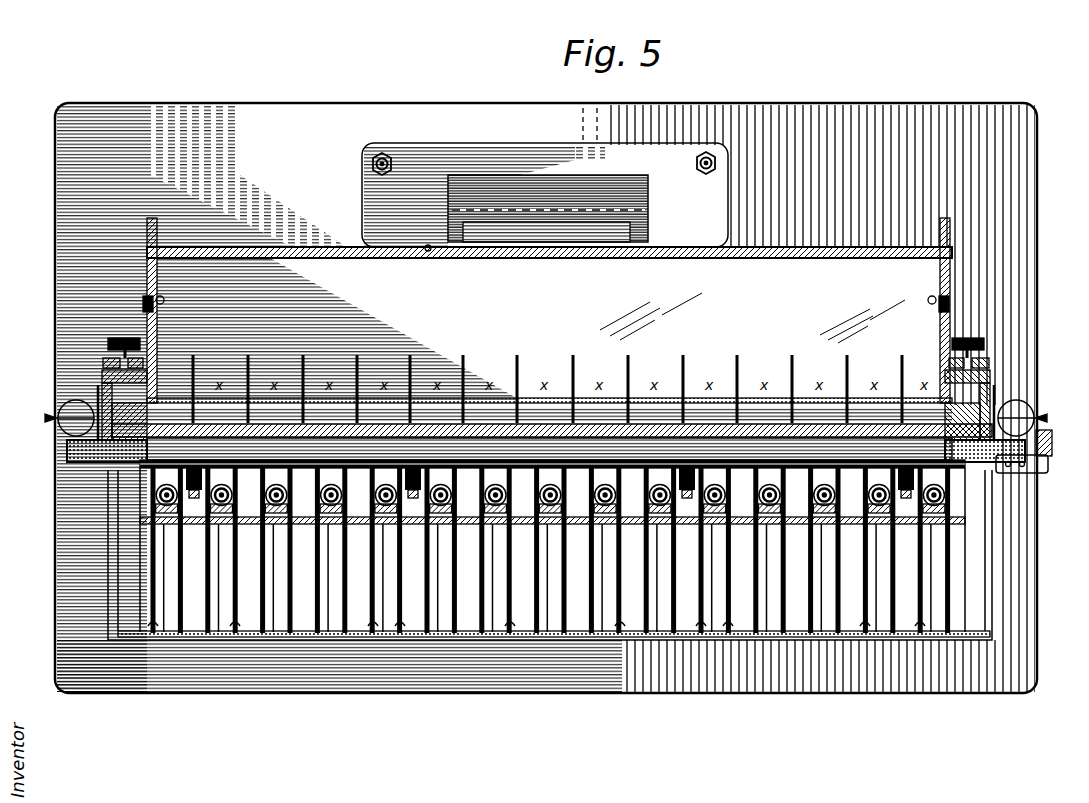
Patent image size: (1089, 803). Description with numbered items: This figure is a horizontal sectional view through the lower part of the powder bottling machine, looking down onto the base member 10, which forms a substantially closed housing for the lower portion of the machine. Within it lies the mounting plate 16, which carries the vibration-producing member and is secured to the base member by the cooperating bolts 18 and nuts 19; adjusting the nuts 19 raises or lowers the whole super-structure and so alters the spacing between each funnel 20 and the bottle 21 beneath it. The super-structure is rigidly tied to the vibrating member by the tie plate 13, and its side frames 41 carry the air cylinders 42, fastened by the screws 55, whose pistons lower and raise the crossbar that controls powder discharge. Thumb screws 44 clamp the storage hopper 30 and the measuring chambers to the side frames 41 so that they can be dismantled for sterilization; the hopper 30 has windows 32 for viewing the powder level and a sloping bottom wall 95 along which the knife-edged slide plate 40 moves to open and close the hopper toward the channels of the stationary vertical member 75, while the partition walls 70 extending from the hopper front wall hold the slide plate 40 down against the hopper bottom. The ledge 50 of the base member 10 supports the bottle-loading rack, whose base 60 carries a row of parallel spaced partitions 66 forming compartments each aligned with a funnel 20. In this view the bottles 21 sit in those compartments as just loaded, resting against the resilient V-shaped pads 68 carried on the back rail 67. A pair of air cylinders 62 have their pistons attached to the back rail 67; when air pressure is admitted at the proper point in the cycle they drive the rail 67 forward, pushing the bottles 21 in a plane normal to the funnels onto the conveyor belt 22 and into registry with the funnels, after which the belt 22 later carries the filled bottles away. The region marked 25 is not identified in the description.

The base member 10 is at (276, 705).
The tie plate 13 is at (656, 244).
The mounting plate 16 is at (365, 218).
The bolts 18 is at (368, 172).
The nuts 19 is at (374, 165).
The funnel 20 is at (550, 484).
The bottle 21 is at (551, 550).
The conveyor belt 22 is at (66, 470).
The base 25 is at (546, 683).
The storage hopper 30 is at (550, 523).
The windows 32 is at (146, 300).
The slide plate 40 is at (685, 262).
The side frame 41 is at (108, 472).
The air cylinder 42 is at (80, 400).
The thumb screws 44 is at (128, 338).
The ledge 50 is at (112, 628).
The screws 55 is at (541, 428).
The rack base 60 is at (605, 640).
The air cylinders 62 is at (300, 640).
The partitions 66 is at (155, 630).
The back rail 67 is at (554, 578).
The resilient V-shaped pads 68 is at (547, 578).
The partition walls 70 is at (198, 362).
The vertical member 75 is at (640, 398).
The sloping wall 95 is at (428, 252).